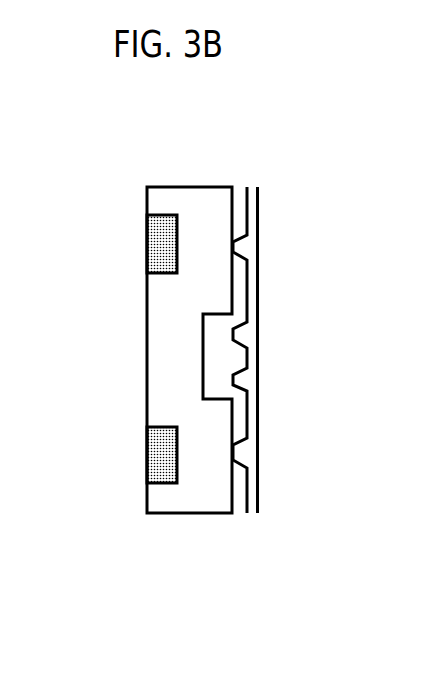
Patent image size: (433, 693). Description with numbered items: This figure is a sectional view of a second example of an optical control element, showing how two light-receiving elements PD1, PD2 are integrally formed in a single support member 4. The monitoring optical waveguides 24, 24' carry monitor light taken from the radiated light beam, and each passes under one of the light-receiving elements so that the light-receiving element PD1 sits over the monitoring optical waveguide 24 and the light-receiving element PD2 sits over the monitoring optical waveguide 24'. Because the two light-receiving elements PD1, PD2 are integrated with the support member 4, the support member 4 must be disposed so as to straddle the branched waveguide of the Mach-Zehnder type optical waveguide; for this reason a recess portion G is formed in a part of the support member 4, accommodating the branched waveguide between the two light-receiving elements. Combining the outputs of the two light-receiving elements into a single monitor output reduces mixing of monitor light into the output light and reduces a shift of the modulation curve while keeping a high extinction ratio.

The support member 4 is at (187, 505).
The light-receiving element PD1 is at (162, 245).
The light-receiving element PD2 is at (162, 457).
The recess portion G is at (202, 360).
The monitoring optical waveguide 24 is at (255, 301).
The monitoring optical waveguide 24' is at (259, 399).